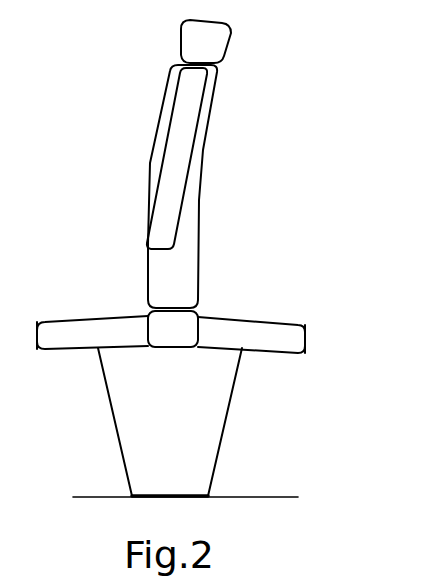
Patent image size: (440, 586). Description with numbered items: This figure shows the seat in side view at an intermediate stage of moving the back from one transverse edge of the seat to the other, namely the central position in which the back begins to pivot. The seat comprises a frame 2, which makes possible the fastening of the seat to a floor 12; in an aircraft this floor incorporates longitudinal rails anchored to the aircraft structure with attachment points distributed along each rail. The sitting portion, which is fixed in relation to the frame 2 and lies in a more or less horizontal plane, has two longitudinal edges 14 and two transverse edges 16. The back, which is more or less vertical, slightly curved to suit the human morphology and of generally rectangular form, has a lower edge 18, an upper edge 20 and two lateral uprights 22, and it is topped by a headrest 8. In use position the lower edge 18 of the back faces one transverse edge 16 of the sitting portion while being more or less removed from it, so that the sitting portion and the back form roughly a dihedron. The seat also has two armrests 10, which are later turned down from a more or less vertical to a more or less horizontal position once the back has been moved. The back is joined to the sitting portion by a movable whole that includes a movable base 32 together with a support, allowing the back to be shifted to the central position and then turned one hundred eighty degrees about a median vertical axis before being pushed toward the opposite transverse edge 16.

The frame 2 is at (212, 400).
The headrest 8 is at (198, 33).
The armrests 10 is at (182, 140).
The floor 12 is at (263, 497).
The longitudinal edges 14 is at (268, 330).
The transverse edges 16 is at (38, 335).
The lower edge 18 is at (173, 308).
The upper edge 20 is at (220, 68).
The lateral uprights 22 is at (188, 207).
The movable base 32 is at (153, 316).